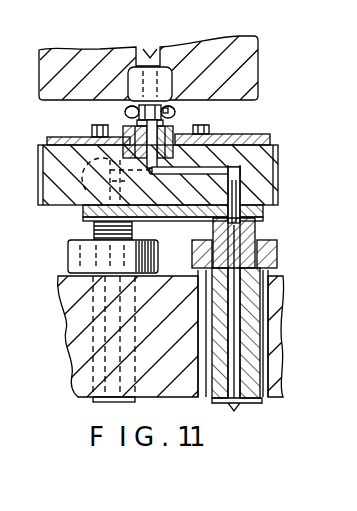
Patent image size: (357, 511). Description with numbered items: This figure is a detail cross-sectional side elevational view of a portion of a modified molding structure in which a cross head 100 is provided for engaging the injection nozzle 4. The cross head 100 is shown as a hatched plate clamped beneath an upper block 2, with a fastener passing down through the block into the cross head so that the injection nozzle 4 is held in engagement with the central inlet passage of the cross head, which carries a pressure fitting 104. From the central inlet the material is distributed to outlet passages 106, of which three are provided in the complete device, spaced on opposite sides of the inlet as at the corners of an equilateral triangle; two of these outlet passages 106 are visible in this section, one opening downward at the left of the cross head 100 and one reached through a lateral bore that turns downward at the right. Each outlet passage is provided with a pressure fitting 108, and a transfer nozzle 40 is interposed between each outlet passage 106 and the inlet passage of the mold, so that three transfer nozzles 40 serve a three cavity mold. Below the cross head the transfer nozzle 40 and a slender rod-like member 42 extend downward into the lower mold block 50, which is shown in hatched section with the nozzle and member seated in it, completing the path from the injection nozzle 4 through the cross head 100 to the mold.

The workpiece 2 is at (87, 62).
The injection nozzle 4 is at (128, 115).
The cross head 100 is at (43, 183).
The pressure fitting 104 is at (163, 124).
The outlet passages 106 is at (208, 150).
The pressure fittings 108 is at (100, 233).
The transfer nozzles 40 is at (201, 233).
The base block 50 is at (70, 327).
The rod 42 is at (234, 411).